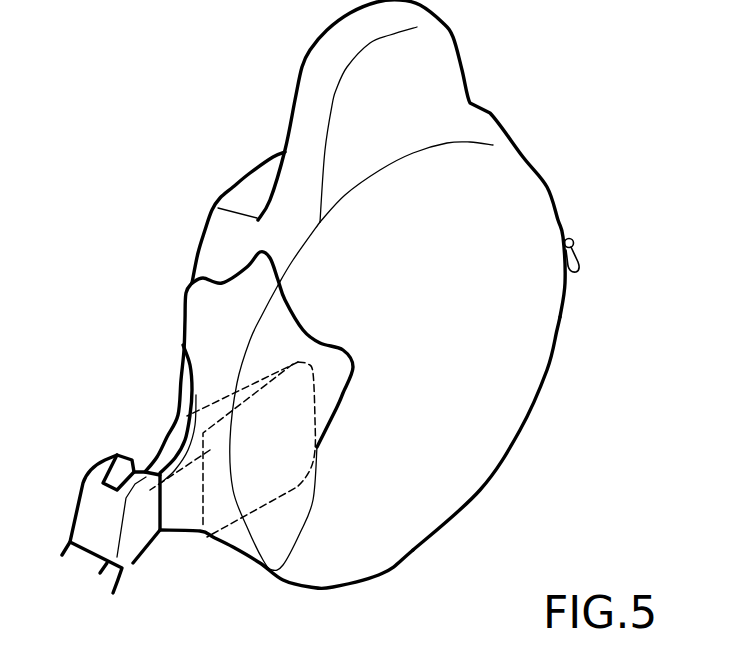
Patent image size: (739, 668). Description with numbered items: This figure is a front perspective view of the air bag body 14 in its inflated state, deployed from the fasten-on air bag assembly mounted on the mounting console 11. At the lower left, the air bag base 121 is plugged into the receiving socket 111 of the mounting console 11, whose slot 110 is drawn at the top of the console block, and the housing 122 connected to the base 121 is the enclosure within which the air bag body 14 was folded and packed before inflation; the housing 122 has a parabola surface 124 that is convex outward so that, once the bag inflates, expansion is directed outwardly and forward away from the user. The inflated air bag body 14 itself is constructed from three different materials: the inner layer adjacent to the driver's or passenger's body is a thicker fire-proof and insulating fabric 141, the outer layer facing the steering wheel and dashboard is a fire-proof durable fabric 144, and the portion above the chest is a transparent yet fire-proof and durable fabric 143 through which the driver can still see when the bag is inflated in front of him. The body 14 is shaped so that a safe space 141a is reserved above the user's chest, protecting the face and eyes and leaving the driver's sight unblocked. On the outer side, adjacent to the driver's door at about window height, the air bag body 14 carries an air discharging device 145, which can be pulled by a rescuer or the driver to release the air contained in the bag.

The mounting console 11 is at (90, 515).
The slot of connector block 110 is at (115, 465).
The receiving socket 111 is at (170, 522).
The air bag base 121 is at (172, 438).
The housing 122 is at (320, 340).
The parabola surface 124 is at (263, 495).
The air bag body 14 is at (492, 107).
The fire-proof and insulating fabric 141 is at (198, 247).
The safe space 141a is at (255, 193).
The transparent fire-proof and durable fabric 143 is at (313, 110).
The fire-proof durable fabric 144 is at (538, 365).
The air discharging device 145 is at (580, 258).